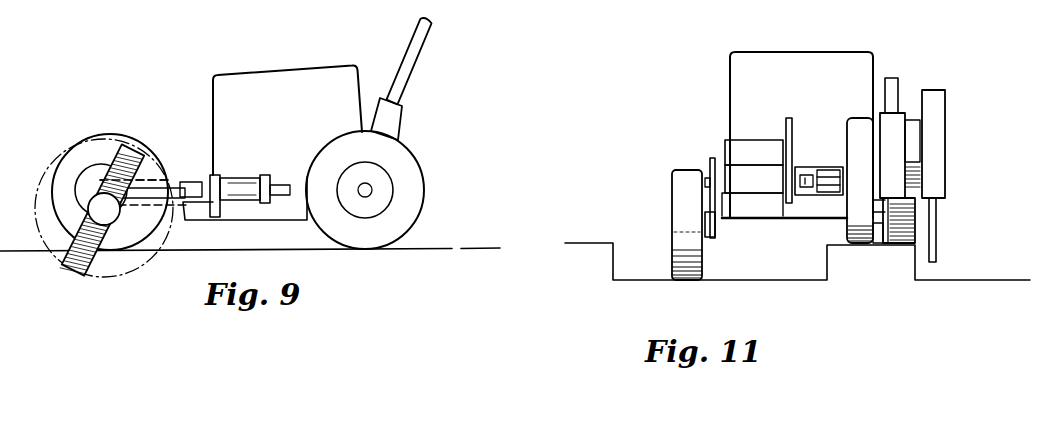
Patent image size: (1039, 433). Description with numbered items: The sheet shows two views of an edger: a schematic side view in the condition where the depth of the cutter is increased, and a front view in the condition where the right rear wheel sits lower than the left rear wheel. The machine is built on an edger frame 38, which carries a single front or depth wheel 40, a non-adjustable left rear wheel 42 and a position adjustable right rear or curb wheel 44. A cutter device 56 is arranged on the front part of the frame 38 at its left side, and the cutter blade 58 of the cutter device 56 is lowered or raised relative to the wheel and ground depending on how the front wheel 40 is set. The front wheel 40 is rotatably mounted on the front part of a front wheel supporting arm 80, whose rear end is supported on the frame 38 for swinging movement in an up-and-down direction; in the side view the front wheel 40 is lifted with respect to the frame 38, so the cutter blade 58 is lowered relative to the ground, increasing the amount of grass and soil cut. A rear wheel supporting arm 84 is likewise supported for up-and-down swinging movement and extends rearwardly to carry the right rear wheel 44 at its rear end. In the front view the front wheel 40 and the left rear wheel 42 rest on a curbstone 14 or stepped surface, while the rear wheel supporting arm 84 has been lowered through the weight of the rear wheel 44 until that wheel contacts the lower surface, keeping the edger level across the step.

In FIG. 11, the curbstone 14 is at (877, 255).
In FIG. 9, the edger frame 38 is at (280, 215).
In FIG. 11, the edger frame 38 is at (771, 223).
In FIG. 9, the front wheel 40 is at (106, 134).
In FIG. 11, the front wheel 40 is at (860, 230).
In FIG. 9, the left rear wheel 42 is at (416, 160).
In FIG. 11, the left rear wheel 42 is at (903, 245).
In FIG. 11, the right rear wheel 44 is at (672, 214).
In FIG. 11, the cutter device 56 is at (957, 126).
In FIG. 9, the cutter blade 58 is at (92, 262).
In FIG. 11, the cutter blade 58 is at (940, 213).
In FIG. 9, the front wheel supporting arm 80 is at (172, 176).
In FIG. 11, the front wheel supporting arm 80 is at (822, 165).
In FIG. 11, the rear wheel supporting arm 84 is at (712, 168).